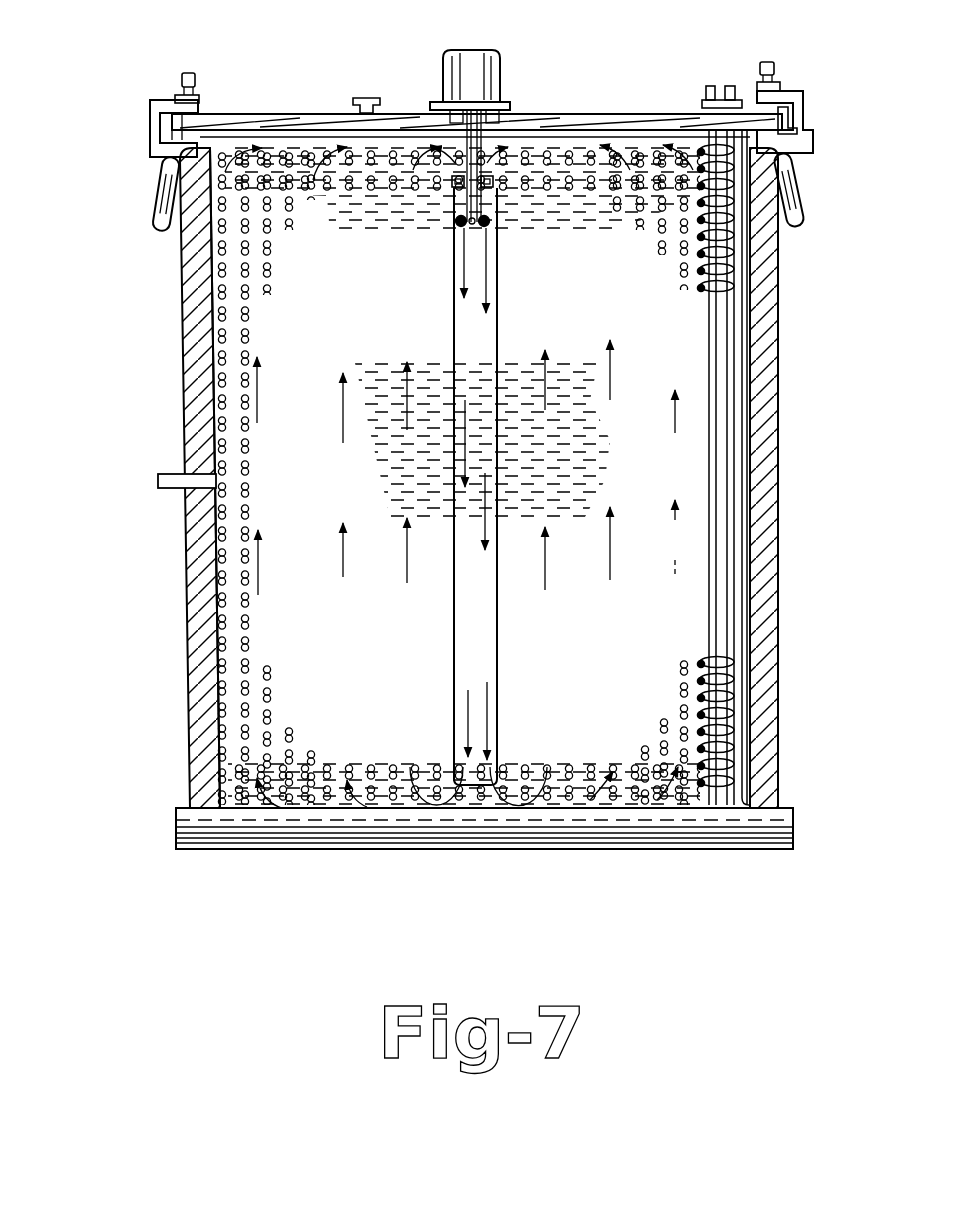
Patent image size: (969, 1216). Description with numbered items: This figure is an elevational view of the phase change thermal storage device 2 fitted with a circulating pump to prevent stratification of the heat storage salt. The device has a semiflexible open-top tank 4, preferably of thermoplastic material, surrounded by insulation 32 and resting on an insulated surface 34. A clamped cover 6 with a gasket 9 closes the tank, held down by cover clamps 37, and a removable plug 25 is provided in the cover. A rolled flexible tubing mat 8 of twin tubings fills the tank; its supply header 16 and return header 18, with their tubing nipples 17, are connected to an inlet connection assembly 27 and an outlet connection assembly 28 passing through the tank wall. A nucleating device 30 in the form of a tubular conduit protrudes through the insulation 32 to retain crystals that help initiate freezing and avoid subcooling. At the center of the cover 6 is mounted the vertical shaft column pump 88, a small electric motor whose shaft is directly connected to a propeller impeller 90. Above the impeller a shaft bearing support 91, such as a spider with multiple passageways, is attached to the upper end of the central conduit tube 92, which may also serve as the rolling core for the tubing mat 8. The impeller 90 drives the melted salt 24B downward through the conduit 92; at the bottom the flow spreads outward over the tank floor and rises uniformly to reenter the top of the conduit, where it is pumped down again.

The thermal storage device 2 is at (464, 522).
The tank 4 is at (212, 725).
The cover 6 is at (263, 117).
The flexible tubing mat 8 is at (692, 292).
The gasket 9 is at (192, 137).
The supply header 16 is at (716, 528).
The tubing nipples 17 is at (714, 348).
The return header 18 is at (738, 542).
The melted unfrozen PCM 24B is at (484, 450).
The removable plug 25 is at (360, 97).
The inlet connection assembly 27 is at (710, 88).
The outlet connection assembly 28 is at (731, 86).
The nucleating device 30 is at (176, 481).
The insulation 32 is at (199, 643).
The insulated surface 34 is at (668, 835).
The cover clamps 37 is at (799, 121).
The vertical shaft column pump 88 is at (490, 52).
The propeller impeller 90 is at (491, 220).
The shaft bearing support 91 is at (453, 186).
The conduit tube 92 is at (498, 343).